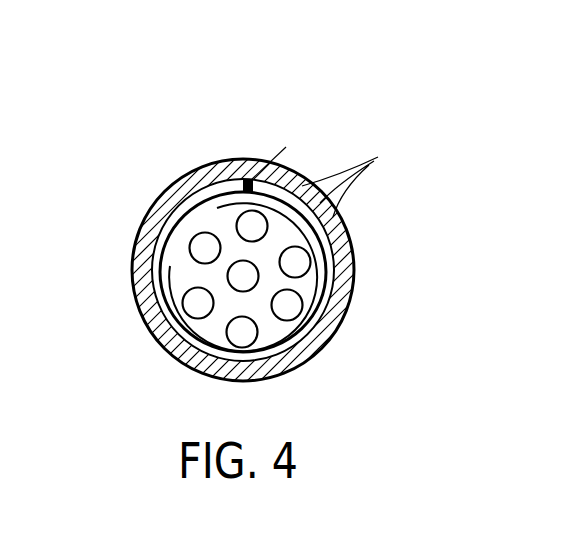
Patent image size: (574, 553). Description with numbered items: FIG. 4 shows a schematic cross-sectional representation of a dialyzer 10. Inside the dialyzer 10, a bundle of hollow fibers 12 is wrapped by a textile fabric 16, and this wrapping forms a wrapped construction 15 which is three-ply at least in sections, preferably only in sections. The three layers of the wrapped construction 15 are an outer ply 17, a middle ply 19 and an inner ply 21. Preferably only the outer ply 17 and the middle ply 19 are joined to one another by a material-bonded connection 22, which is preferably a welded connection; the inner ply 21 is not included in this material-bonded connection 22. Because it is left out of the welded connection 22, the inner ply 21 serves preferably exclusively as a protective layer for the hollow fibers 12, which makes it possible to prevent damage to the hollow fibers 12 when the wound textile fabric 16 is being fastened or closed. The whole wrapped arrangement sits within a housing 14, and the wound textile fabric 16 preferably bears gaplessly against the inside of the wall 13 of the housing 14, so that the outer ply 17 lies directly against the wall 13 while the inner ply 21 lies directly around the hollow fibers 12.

The dialyzer 10 is at (320, 100).
The hollow fibers 12 is at (200, 246).
The wall 13 is at (340, 266).
The housing 14 is at (340, 223).
The wrapped construction 15 is at (347, 173).
The textile fabric 16 is at (157, 263).
The outer ply 17 is at (245, 182).
The middle ply 19 is at (210, 187).
The inner ply 21 is at (197, 203).
The material-bonded connection 22 is at (289, 168).